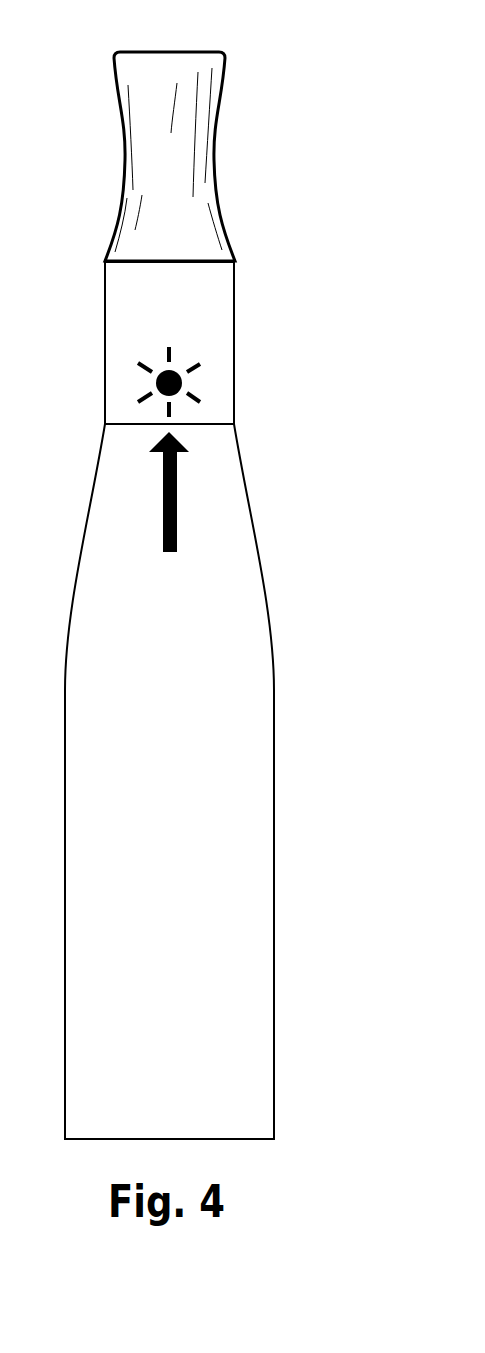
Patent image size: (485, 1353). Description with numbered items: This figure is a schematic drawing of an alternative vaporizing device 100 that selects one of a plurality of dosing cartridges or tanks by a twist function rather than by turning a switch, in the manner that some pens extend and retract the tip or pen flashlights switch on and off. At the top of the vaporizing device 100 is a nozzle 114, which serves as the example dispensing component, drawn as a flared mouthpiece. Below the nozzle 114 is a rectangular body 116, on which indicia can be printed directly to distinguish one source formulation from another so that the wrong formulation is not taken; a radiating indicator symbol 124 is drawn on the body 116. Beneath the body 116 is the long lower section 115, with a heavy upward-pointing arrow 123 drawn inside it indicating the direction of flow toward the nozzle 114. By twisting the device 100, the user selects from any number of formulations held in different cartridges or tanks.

The vaporizing device 100 is at (346, 168).
The nozzle 114 is at (218, 203).
The body 116 is at (105, 322).
The light indicator (LED) 124 is at (156, 383).
The airflow direction arrow 123 is at (177, 496).
The battery body section 115 is at (273, 795).